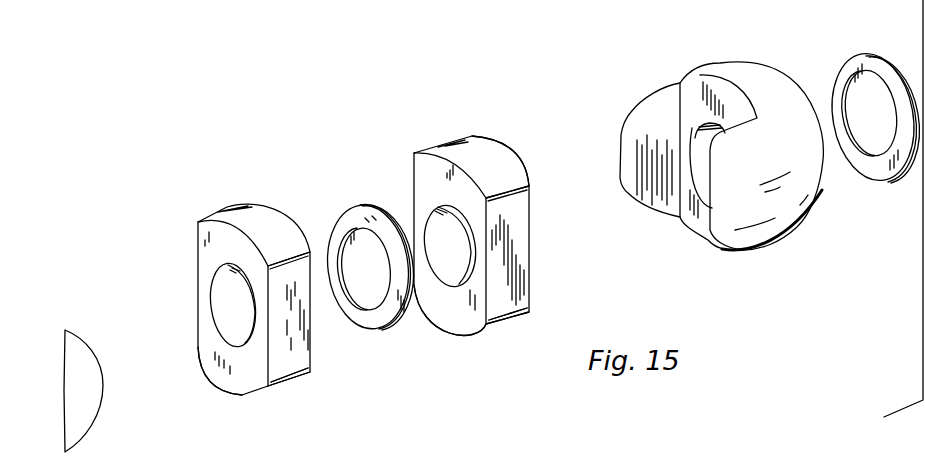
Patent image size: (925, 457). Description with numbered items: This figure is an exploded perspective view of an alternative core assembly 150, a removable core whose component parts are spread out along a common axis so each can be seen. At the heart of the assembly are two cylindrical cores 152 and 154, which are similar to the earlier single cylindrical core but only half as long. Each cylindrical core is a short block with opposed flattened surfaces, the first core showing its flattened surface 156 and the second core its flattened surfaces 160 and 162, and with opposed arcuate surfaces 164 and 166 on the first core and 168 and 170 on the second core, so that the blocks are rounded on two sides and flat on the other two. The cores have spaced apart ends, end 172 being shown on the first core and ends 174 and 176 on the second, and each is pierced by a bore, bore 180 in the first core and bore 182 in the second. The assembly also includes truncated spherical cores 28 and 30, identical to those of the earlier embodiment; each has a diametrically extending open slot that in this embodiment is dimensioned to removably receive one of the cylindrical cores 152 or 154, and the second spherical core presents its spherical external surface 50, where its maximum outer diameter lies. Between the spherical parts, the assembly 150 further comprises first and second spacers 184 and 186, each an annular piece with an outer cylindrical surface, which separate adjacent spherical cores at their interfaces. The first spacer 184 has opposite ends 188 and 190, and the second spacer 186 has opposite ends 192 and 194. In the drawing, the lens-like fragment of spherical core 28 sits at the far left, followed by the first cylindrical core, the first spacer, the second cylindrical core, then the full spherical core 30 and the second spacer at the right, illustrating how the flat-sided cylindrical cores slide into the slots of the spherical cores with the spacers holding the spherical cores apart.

The truncated spherical core 28 is at (93, 342).
The truncated spherical core 30 is at (763, 62).
The spherical external surface 50 is at (773, 222).
The alternative core assembly 150 is at (363, 133).
The cylindrical core 152 is at (260, 395).
The cylindrical core 154 is at (507, 332).
The flattened surface 156 is at (200, 243).
The flattened surface 160 is at (412, 165).
The flattened surface 162 is at (520, 252).
The arcuate surface 164 is at (248, 210).
The arcuate surface 166 is at (210, 373).
The arcuate surface 168 is at (484, 142).
The arcuate surface 170 is at (457, 335).
The end 172 is at (293, 221).
The end 174 is at (431, 158).
The end 176 is at (518, 160).
The bore 180 is at (220, 278).
The bore 182 is at (462, 270).
The spacer 184 is at (382, 323).
The spacer 186 is at (907, 168).
The end 188 is at (365, 315).
The end 190 is at (368, 222).
The end 192 is at (873, 165).
The end 194 is at (893, 44).